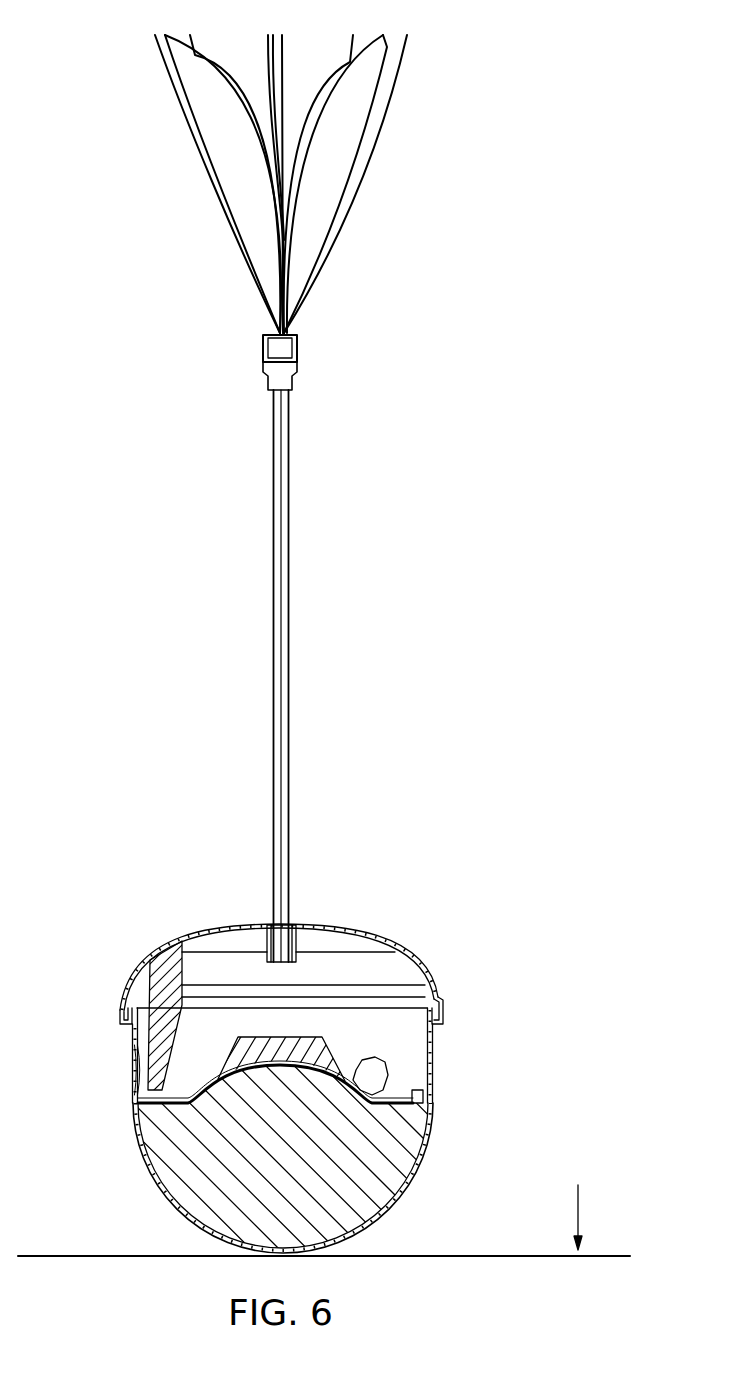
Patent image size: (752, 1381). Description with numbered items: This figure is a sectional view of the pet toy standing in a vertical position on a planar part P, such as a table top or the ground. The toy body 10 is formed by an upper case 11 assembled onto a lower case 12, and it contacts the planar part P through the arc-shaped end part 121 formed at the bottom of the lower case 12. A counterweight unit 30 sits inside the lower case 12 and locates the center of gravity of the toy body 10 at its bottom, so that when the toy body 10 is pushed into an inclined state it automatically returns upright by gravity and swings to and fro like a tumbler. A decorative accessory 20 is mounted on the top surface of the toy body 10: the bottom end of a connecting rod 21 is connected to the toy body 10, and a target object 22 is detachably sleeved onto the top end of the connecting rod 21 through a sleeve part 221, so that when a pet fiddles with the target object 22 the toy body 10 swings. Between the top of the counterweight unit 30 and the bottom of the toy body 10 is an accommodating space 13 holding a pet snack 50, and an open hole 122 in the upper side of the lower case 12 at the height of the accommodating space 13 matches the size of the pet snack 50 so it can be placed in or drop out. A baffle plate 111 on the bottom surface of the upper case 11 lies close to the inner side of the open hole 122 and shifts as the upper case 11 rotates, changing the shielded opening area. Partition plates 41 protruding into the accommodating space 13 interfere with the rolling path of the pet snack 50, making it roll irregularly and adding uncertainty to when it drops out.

The toy body 10 is at (420, 938).
The upper case 11 is at (428, 967).
The baffle plate 111 is at (160, 992).
The lower case 12 is at (432, 1043).
The arc-shaped end part 121 is at (145, 1165).
The open hole 122 is at (133, 1057).
The accommodating space 13 is at (205, 1030).
The decorative accessory 20 is at (322, 589).
The connecting rod 21 is at (282, 698).
The target object 22 is at (333, 173).
The sleeve part 221 is at (298, 347).
The counterweight unit 30 is at (383, 1173).
The partition plate 41 is at (310, 1043).
The pet snack 50 is at (373, 1073).
The planar part P is at (578, 1200).